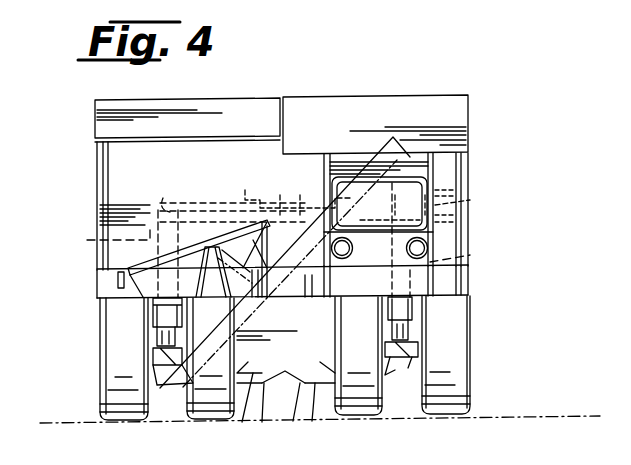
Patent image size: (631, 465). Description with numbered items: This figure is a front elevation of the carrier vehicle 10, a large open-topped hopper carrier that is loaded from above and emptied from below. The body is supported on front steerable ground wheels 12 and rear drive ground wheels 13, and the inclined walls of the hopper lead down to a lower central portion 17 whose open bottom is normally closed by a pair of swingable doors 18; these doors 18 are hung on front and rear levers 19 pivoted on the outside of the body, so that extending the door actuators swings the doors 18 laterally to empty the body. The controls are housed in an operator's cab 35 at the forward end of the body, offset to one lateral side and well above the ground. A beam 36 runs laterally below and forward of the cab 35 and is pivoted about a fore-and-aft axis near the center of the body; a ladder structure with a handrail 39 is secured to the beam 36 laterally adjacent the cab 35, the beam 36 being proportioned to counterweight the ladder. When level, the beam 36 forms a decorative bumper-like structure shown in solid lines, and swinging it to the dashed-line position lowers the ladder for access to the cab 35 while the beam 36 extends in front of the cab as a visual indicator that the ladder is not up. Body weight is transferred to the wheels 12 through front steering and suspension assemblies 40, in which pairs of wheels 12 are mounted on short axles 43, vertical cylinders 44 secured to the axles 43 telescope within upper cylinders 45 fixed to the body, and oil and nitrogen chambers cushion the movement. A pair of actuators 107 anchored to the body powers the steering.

The carrier vehicle 10 is at (420, 84).
The front steerable ground wheels 12 is at (112, 395).
The rear drive ground wheels 13 is at (96, 170).
The lower central portion 17 is at (289, 361).
The swingable doors 18 is at (290, 390).
The front and rear levers 19 is at (258, 404).
The operator's cab 35 is at (440, 214).
The beam 36 is at (464, 282).
The handrail 39 is at (230, 226).
The front steering and suspension assemblies 40 is at (153, 317).
The short axles 43 is at (157, 353).
The vertical cylinders 44 is at (163, 336).
The upper cylinders 45 is at (484, 247).
The actuators 107 is at (198, 198).